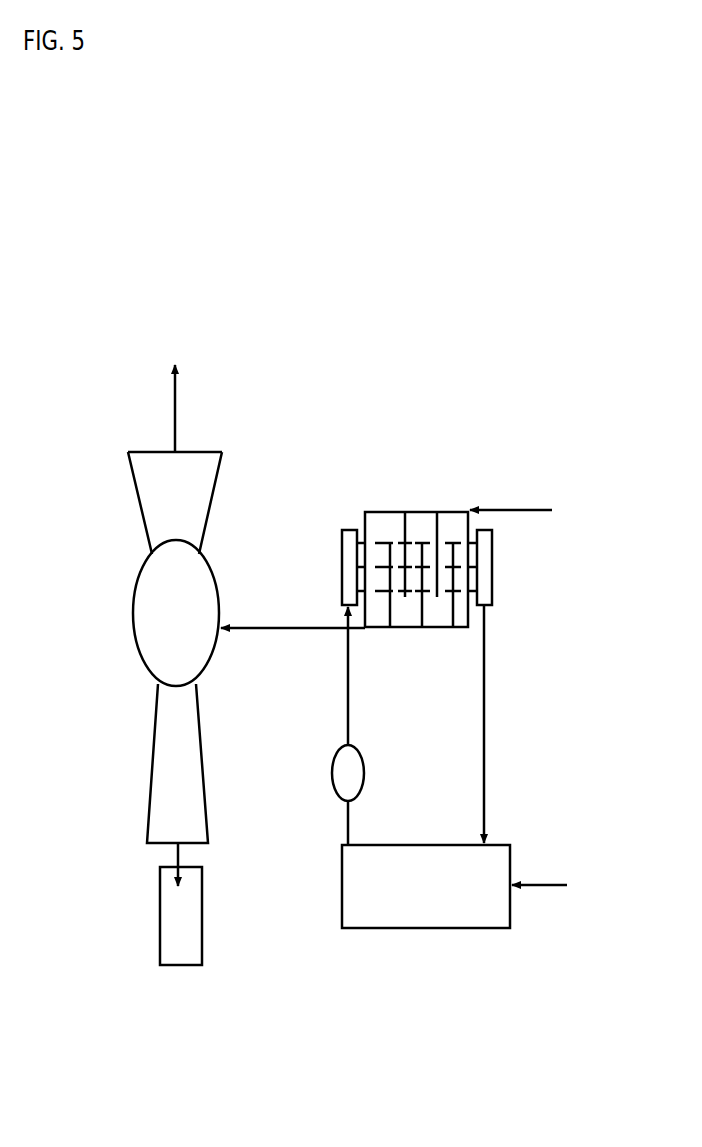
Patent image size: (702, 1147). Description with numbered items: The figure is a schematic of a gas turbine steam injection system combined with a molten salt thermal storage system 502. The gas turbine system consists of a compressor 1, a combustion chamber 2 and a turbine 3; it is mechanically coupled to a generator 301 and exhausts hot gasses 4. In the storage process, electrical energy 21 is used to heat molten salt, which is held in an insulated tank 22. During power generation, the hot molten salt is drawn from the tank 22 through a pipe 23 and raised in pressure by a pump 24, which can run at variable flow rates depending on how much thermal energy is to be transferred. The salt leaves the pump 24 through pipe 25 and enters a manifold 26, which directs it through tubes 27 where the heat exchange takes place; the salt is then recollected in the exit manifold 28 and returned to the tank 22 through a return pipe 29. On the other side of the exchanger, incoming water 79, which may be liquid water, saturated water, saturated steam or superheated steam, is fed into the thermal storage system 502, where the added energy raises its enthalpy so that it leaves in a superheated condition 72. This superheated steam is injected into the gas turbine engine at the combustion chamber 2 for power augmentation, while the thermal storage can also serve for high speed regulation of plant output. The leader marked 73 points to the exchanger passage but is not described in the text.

The compressor 1 is at (177, 785).
The combustion chamber 2 is at (176, 613).
The turbine 3 is at (175, 503).
The hot gasses 4 is at (165, 408).
The electrical energy 21 is at (552, 885).
The insulated tank 22 is at (426, 886).
The pipe 23 is at (337, 823).
The pump 24 is at (362, 773).
The pipe 25 is at (336, 676).
The manifold 26 is at (340, 567).
The tubes 27 is at (395, 535).
The exit manifold 28 is at (492, 567).
The return pipe 29 is at (497, 724).
The superheated condition 72 is at (293, 612).
The heat exchanger passage 73 is at (396, 606).
The incoming water 79 is at (528, 512).
The generator 301 is at (178, 925).
The thermal storage system 502 is at (449, 503).